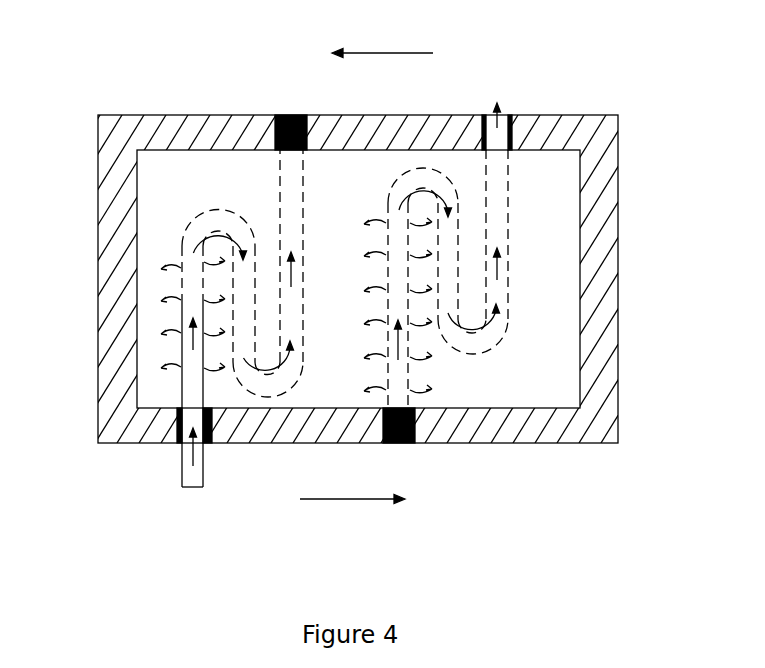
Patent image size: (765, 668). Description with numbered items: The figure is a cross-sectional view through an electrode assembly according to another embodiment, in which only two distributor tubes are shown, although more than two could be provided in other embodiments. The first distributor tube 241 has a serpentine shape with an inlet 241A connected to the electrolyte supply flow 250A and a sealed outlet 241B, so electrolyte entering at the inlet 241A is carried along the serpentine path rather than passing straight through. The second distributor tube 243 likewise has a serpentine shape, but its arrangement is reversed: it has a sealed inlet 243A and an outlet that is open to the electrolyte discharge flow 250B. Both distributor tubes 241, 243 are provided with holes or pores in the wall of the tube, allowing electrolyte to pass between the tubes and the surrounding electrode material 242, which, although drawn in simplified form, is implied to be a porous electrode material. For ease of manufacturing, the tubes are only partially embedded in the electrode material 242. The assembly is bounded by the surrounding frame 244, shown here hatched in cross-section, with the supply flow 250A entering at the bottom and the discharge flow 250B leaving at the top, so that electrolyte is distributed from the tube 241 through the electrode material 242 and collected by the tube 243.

The distributor tube 241 is at (182, 318).
The inlet 241A is at (182, 463).
The sealed outlet 241B is at (295, 115).
The electrode material 242 is at (528, 202).
The distributor tube 243 is at (507, 287).
The sealed inlet 243A is at (502, 132).
The housing wall 244 is at (112, 390).
The electrolyte supply flow 250A is at (352, 518).
The electrolyte discharge flow 250B is at (382, 39).